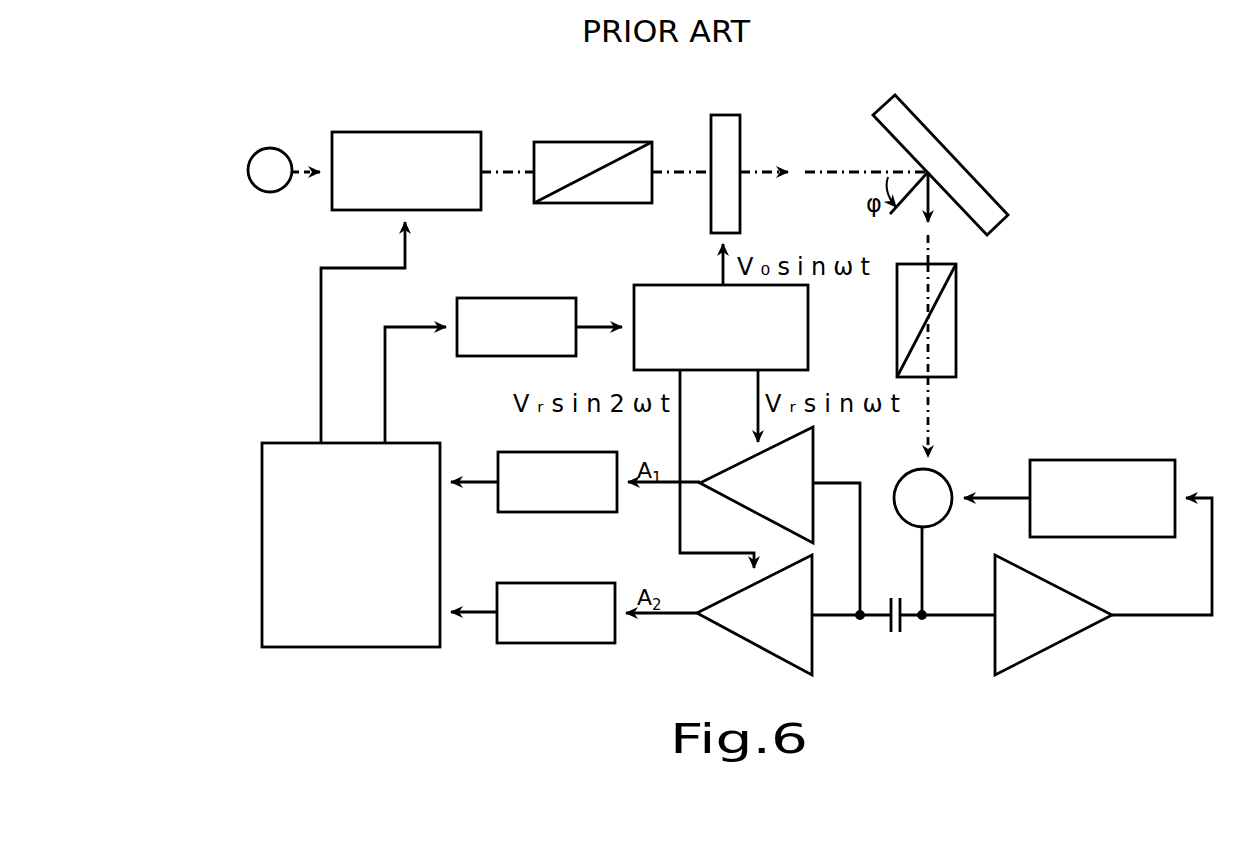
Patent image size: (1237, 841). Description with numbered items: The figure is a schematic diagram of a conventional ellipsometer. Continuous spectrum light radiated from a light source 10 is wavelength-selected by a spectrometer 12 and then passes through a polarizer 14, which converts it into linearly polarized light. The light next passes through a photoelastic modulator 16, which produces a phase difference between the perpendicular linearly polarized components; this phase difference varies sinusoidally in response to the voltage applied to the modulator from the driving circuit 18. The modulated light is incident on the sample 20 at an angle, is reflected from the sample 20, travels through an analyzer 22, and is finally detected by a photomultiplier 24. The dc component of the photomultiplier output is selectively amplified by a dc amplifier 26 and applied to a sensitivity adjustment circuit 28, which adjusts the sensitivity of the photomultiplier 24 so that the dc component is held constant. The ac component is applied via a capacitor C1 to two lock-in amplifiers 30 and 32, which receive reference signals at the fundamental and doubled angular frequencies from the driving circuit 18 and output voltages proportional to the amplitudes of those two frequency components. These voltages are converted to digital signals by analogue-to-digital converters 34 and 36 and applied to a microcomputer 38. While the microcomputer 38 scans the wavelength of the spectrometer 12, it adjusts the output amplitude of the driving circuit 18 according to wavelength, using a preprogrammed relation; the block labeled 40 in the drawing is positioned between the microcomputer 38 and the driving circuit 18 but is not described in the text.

The light source 10 is at (277, 148).
The spectrometer 12 is at (423, 132).
The polarizer 14 is at (596, 142).
The photoelastic modulator 16 is at (727, 115).
The driving circuit 18 is at (810, 345).
The sample 20 is at (928, 127).
The analyzer 22 is at (958, 315).
The photomultiplier 24 is at (947, 481).
The dc amplifier 26 is at (1065, 640).
The sensitivity adjustment circuit 28 is at (1115, 537).
The lock-in amplifier 30 is at (815, 452).
The lock-in amplifier 32 is at (812, 652).
The analogue-to-digital converter 34 is at (580, 512).
The analogue-to-digital converter 36 is at (542, 582).
The microcomputer 38 is at (300, 442).
The D/A converter 40 is at (492, 297).
The capacitor C1 is at (906, 625).